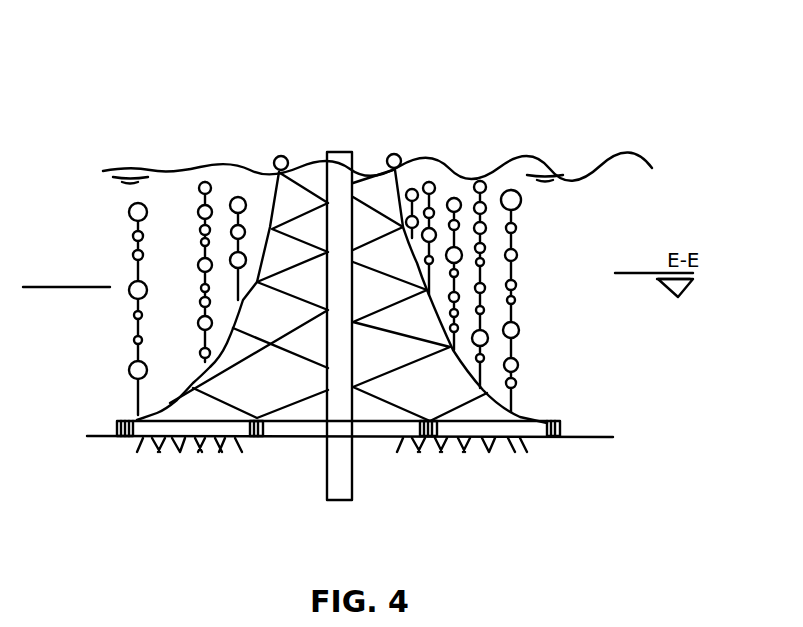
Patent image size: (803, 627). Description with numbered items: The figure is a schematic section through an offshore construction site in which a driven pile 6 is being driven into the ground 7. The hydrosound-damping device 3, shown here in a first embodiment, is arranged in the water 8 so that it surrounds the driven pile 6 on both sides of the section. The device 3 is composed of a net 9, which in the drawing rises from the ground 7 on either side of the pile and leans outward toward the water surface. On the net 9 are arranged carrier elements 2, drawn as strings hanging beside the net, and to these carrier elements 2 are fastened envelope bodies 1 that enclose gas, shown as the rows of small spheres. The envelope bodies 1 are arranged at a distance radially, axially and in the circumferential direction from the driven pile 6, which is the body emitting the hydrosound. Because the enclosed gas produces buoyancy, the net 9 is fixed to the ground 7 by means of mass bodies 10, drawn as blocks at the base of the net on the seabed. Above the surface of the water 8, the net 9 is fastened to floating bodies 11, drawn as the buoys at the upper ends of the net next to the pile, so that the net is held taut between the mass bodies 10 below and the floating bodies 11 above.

The envelope bodies 1 is at (520, 281).
The carrier elements 2 is at (138, 398).
The device 3 is at (673, 160).
The driven pile 6 is at (340, 170).
The ground 7 is at (462, 505).
The water 8 is at (628, 240).
The net 9 is at (430, 295).
The mass bodies 10 is at (257, 440).
The floating bodies 11 is at (275, 152).